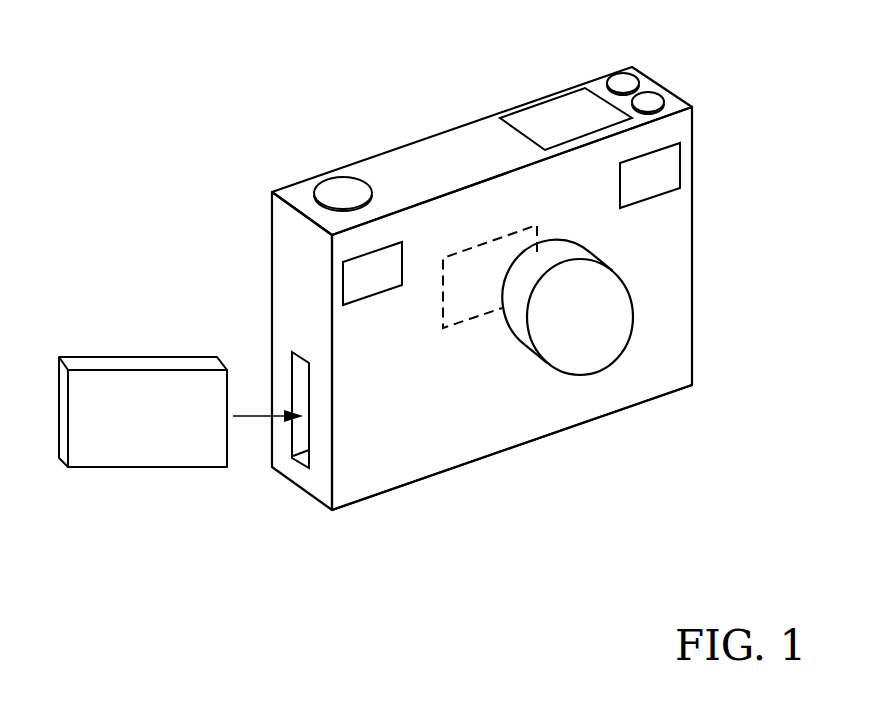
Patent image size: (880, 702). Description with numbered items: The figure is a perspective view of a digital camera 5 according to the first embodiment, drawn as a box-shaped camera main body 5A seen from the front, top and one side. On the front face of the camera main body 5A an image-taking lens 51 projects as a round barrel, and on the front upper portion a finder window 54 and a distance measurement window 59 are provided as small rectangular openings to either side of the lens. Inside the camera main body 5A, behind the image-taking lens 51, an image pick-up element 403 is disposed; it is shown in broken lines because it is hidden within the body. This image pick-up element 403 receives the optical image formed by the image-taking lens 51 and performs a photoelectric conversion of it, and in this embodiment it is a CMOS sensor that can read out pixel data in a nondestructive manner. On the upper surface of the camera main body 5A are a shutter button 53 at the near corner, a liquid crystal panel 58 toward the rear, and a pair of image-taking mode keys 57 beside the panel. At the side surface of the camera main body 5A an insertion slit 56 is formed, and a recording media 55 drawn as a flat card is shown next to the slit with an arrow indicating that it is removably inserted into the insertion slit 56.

The digital camera 5 is at (263, 189).
The camera main body 5A is at (540, 438).
The image-taking lens 51 is at (633, 308).
The shutter button 53 is at (338, 184).
The finder window 54 is at (343, 278).
The recording media 55 is at (117, 357).
The insertion slit 56 is at (303, 438).
The image-taking mode keys 57 is at (640, 63).
The liquid crystal panel 58 is at (555, 98).
The distance measurement window 59 is at (680, 163).
The image pick-up element 403 is at (486, 240).